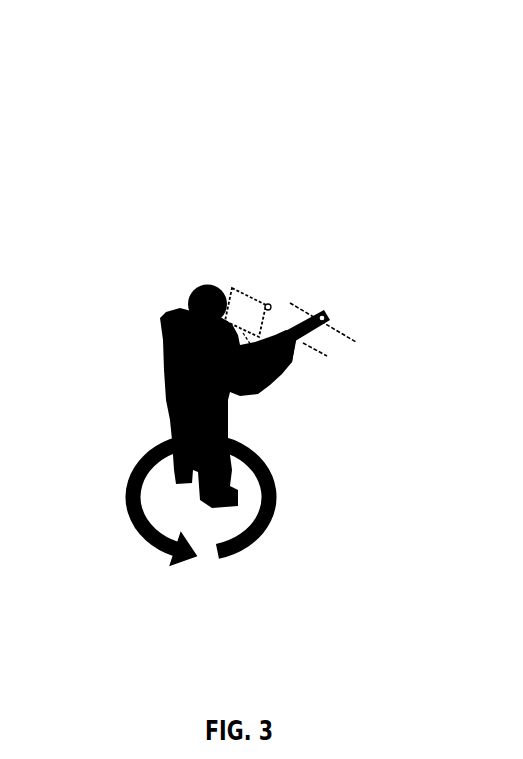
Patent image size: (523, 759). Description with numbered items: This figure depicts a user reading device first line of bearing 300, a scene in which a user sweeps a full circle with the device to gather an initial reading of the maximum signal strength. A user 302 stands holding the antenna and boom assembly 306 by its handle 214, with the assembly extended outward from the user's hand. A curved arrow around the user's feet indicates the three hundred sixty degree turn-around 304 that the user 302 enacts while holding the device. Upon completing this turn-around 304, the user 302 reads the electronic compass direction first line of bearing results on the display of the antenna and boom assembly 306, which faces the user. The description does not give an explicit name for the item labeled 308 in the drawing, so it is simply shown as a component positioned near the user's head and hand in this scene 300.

The user reading device first line of bearing 300 is at (381, 106).
The user 302 is at (163, 312).
The 360 degree turn-around 304 is at (124, 492).
The antenna and boom assembly 306 is at (324, 317).
The wearable display device 308 is at (270, 305).
The handle 214 is at (297, 367).